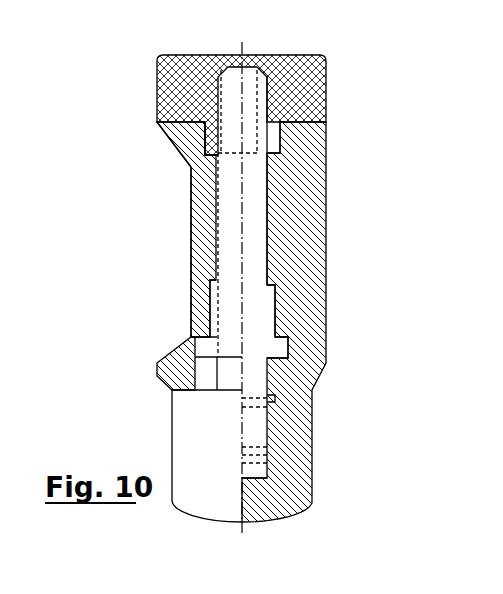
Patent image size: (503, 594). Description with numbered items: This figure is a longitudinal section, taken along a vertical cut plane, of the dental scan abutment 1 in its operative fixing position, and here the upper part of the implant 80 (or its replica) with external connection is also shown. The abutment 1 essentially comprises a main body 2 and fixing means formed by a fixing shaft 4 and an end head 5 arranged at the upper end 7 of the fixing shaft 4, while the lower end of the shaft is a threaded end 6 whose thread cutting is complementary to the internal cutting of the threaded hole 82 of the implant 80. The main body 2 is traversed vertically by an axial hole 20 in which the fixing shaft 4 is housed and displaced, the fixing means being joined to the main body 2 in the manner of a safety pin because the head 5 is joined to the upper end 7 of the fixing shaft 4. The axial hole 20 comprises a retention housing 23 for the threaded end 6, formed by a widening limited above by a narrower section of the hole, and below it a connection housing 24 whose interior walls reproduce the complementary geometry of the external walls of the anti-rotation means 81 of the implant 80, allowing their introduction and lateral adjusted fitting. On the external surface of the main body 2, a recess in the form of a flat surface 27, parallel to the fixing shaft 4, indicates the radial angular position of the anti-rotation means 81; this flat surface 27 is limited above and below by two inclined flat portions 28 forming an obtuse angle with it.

The dental scan abutment 1 is at (98, 67).
The main body 2 is at (250, 299).
The fixing shaft 4 is at (252, 227).
The end head 5 is at (292, 88).
The threaded end 6 is at (255, 430).
The upper end 7 is at (248, 125).
The axial hole 20 is at (268, 178).
The retention housing 23 is at (272, 300).
The connection housing 24 is at (282, 347).
The flat surface 27 is at (191, 241).
The inclined flat portions 28 is at (180, 152).
The implant 80 is at (127, 427).
The anti-rotation means 81 is at (207, 378).
The threaded hole 82 is at (270, 408).